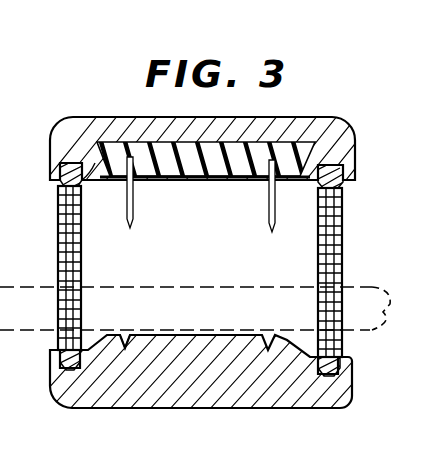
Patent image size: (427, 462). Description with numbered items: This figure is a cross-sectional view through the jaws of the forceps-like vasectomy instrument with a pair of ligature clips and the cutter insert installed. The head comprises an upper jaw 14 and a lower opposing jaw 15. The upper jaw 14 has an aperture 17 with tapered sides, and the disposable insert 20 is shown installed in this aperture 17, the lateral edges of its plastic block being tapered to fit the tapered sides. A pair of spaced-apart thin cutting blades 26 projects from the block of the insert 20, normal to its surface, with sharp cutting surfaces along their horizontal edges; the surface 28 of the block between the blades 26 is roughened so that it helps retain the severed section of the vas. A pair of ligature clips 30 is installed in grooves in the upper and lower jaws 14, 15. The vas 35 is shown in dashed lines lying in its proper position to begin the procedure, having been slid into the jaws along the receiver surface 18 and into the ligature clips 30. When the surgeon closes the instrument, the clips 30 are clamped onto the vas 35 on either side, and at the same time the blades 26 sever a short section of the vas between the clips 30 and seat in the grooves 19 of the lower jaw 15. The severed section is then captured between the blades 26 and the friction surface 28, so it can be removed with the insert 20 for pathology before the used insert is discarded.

The upper jaw 14 is at (344, 156).
The lower opposing jaw 15 is at (348, 388).
The aperture 17 is at (88, 179).
The receiver surface 18 is at (265, 336).
The grooves 19 is at (125, 336).
The disposable insert 20 is at (288, 195).
The cutting blades 26 is at (137, 214).
The roughened surface 28 is at (235, 182).
The ligature clips 30 is at (82, 252).
The vas deferens 35 is at (162, 284).